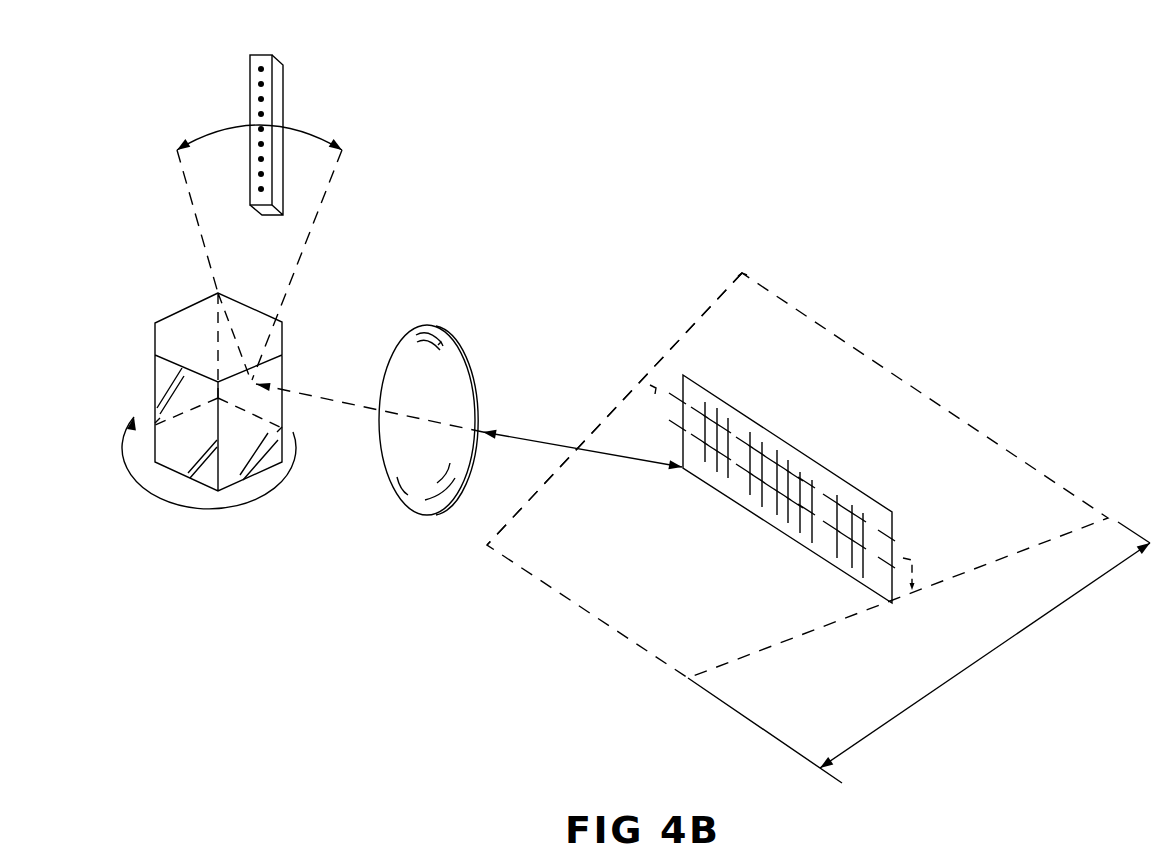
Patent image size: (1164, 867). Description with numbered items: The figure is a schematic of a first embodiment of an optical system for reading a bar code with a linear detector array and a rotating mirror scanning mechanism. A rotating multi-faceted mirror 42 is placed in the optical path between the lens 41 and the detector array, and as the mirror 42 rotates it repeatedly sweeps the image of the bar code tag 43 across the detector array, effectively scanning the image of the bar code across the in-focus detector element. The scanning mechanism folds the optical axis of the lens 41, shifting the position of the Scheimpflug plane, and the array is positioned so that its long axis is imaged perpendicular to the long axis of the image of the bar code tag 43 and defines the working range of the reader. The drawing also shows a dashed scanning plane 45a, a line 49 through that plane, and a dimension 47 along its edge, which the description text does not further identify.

The lens 41 is at (397, 350).
The rotating multi-faceted mirror 42 is at (155, 363).
The bar code tag 43 is at (710, 390).
The scanning plane 45a is at (872, 357).
The scan width 47 is at (883, 728).
The scan line axis 49 is at (658, 415).